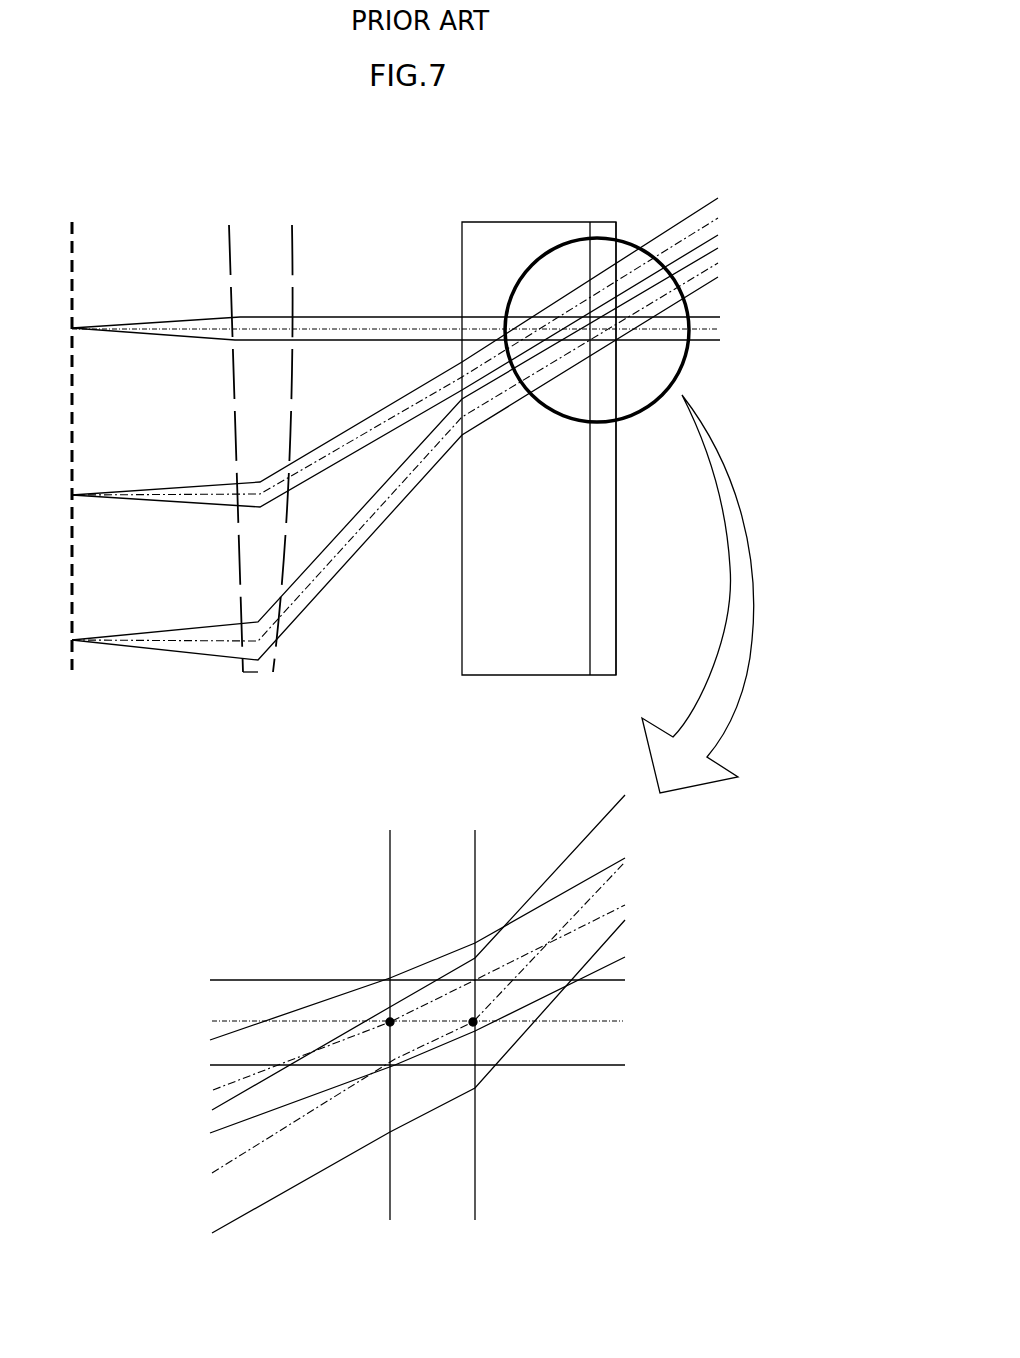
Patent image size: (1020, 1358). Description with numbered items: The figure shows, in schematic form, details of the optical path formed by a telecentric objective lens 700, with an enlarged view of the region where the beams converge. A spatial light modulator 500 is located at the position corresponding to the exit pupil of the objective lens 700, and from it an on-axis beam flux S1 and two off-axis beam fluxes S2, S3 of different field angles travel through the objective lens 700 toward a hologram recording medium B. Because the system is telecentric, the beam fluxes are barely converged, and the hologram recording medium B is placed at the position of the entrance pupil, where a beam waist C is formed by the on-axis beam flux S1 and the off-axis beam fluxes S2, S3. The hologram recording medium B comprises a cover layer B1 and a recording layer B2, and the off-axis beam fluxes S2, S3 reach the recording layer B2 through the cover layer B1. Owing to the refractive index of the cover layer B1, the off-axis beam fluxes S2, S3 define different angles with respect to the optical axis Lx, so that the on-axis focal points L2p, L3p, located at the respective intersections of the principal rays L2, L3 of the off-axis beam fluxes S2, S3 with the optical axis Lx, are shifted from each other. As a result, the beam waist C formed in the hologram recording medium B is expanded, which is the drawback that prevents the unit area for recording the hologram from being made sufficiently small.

The spatial light modulator 500 is at (72, 222).
The objective lens 700 is at (240, 672).
The hologram recording medium B is at (510, 222).
The cover layer B1 is at (490, 676).
The recording layer B2 is at (603, 677).
The beam waist C is at (625, 278).
The optical axis Lx is at (393, 330).
The on-axis beam flux S1 is at (330, 316).
The off-axis beam flux S2 is at (322, 445).
The off-axis beam flux S3 is at (340, 572).
The principal ray L2 is at (382, 422).
The principal ray L3 is at (384, 510).
The on-axis focal point L2p is at (389, 1015).
The on-axis focal point L3p is at (473, 1022).